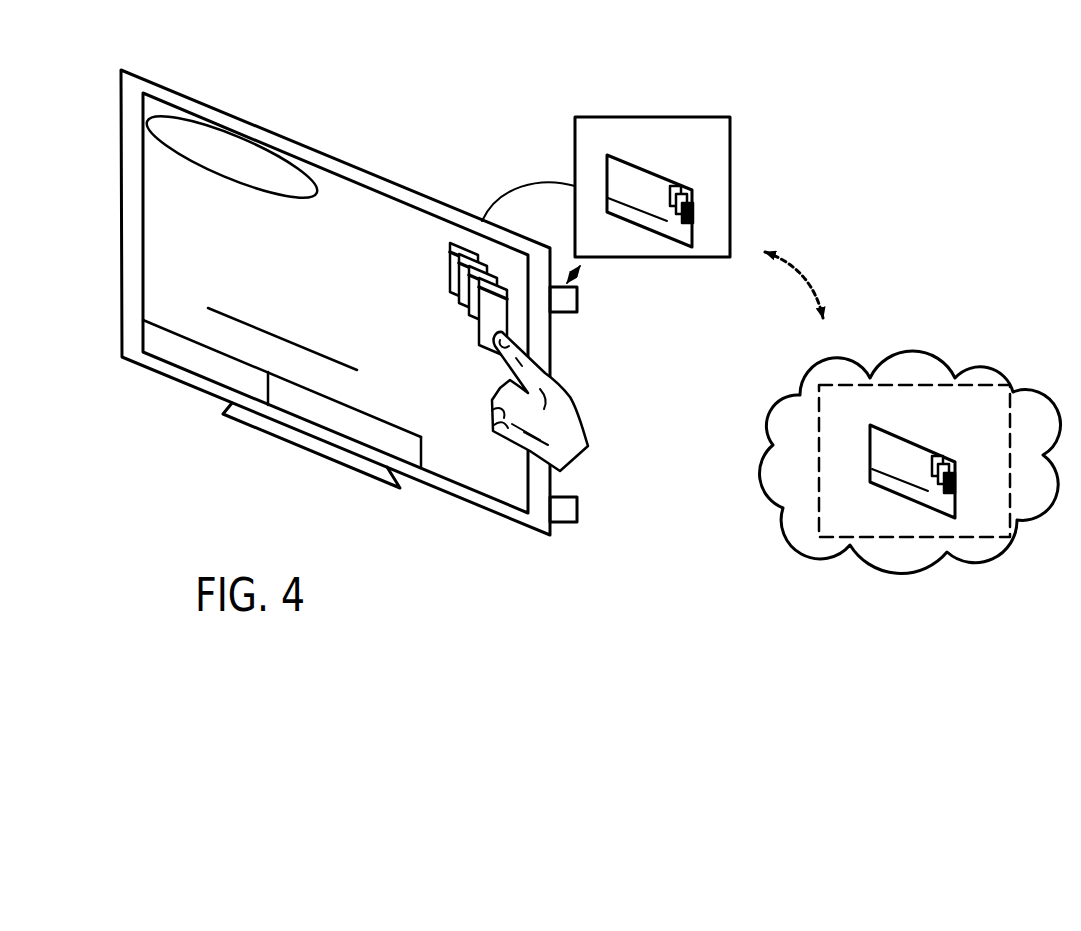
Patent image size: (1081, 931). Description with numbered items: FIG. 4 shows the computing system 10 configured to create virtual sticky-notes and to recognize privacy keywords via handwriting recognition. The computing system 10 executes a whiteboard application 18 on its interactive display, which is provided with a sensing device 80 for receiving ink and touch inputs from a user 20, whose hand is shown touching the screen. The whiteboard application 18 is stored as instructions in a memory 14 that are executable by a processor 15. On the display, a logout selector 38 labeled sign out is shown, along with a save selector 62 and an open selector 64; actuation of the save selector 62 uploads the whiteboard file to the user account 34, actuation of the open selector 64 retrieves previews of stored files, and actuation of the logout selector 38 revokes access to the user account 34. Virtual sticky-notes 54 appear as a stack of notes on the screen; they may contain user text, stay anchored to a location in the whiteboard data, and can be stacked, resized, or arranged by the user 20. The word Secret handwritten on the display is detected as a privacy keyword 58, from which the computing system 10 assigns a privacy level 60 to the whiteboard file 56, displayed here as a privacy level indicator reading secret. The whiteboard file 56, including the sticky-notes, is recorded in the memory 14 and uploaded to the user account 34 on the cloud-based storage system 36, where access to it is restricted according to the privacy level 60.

The computing system 10 is at (382, 154).
The memory 14 is at (729, 251).
The processor 15 is at (578, 300).
The whiteboard application 18 is at (181, 283).
The user 20 is at (585, 462).
The user account 34 is at (1002, 426).
The cloud-based storage system 36 is at (797, 492).
The logout selector 38 is at (244, 185).
The virtual sticky-notes 54 is at (456, 297).
The whiteboard file 56 is at (870, 455).
The privacy keyword 58 is at (362, 350).
The privacy level 60 is at (471, 434).
The save selector 62 is at (217, 374).
The open selector 64 is at (360, 435).
The sensing device 80 is at (578, 512).